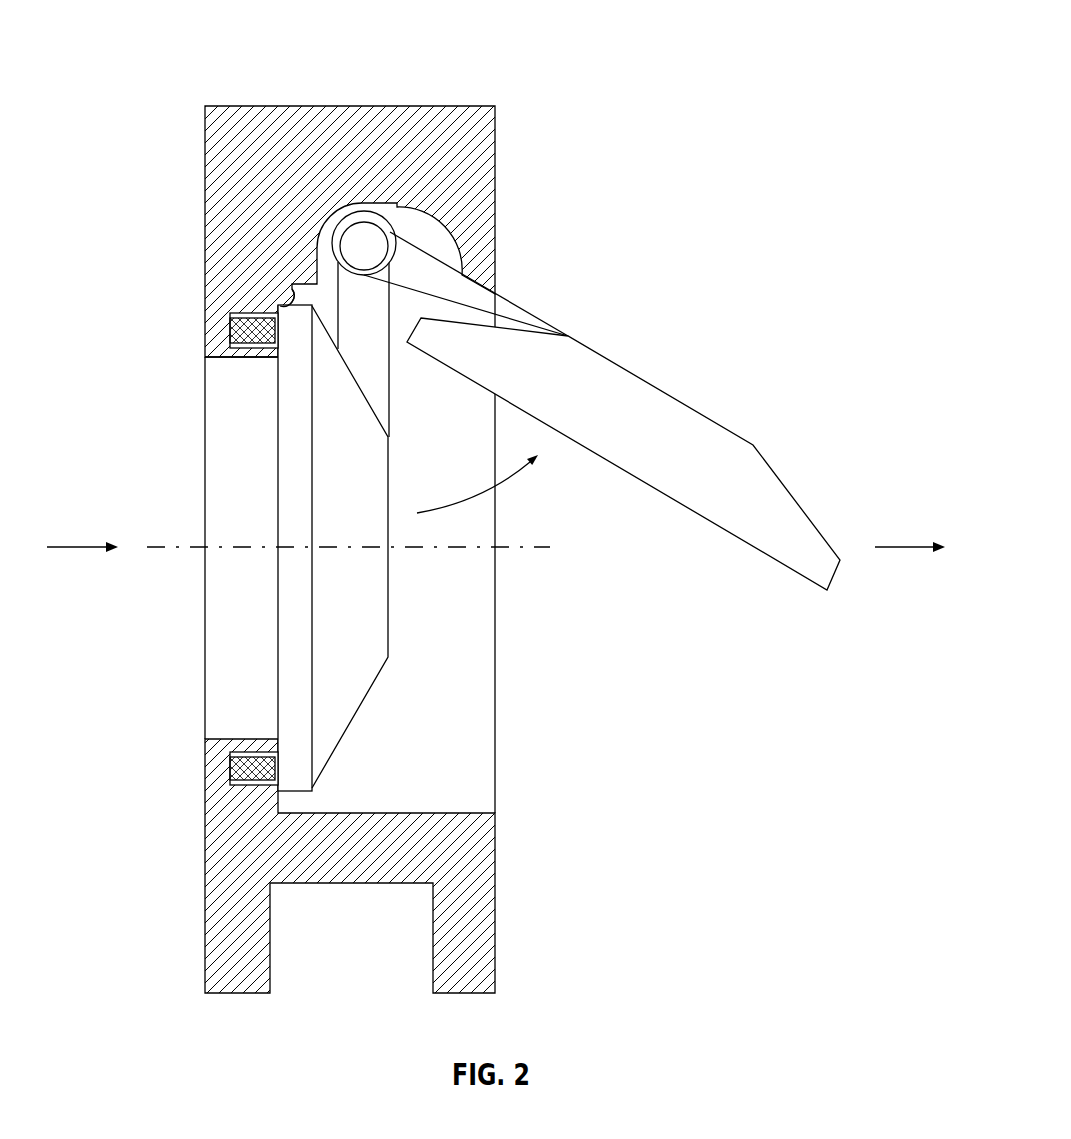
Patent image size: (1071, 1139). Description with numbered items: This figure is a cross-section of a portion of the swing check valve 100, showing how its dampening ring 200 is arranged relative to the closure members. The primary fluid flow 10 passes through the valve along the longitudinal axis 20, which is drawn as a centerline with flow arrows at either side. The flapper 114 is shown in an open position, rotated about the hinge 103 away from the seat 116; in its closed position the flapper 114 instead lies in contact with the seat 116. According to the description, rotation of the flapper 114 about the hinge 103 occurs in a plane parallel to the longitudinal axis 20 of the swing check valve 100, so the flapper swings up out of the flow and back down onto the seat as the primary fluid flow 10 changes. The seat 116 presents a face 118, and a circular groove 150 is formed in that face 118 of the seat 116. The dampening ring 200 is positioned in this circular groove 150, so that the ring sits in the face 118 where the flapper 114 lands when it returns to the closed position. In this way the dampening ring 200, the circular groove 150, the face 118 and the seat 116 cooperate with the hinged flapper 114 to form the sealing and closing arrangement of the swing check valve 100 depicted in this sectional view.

The swing check valve 100 is at (123, 55).
The hinge 103 is at (362, 247).
The flapper 114 is at (723, 421).
The seat 116 is at (240, 360).
The face 118 is at (290, 284).
The dampening ring 200 is at (228, 330).
The circular groove 150 is at (230, 777).
The primary fluid flow 10 is at (83, 547).
The longitudinal axis 20 is at (523, 548).